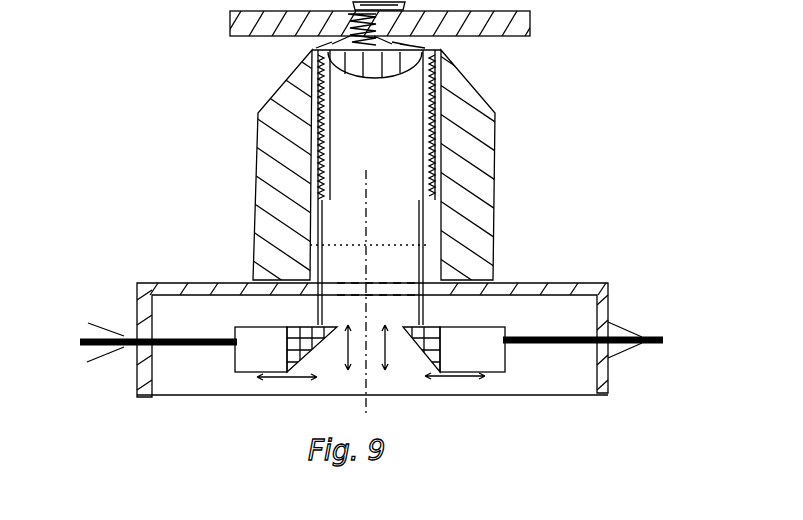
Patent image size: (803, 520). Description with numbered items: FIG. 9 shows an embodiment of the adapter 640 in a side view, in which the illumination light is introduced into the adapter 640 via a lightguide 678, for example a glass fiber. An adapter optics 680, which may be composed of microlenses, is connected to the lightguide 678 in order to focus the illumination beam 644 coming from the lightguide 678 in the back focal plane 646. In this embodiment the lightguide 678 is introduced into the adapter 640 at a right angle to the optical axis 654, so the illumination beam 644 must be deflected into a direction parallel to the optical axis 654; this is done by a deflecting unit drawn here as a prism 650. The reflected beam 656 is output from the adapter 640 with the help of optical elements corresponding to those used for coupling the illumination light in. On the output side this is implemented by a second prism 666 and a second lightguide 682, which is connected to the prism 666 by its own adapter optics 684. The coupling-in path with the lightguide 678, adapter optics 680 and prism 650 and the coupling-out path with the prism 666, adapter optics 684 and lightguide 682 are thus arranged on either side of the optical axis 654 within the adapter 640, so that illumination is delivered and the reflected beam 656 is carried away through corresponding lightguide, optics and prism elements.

The adapter 640 is at (605, 282).
The illumination beam 644 is at (326, 66).
The back focal plane 646 is at (397, 238).
The prism 650 is at (287, 372).
The optical axis 654 is at (377, 200).
The reflected beam 656 is at (432, 88).
The prism 666 is at (438, 362).
The lightguide 678 is at (98, 336).
The adapter optics 680 is at (233, 371).
The lightguide 682 is at (653, 331).
The adapter optics 684 is at (500, 364).